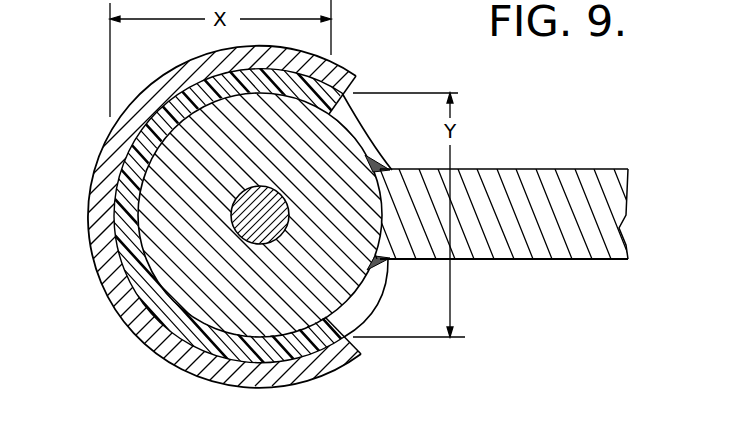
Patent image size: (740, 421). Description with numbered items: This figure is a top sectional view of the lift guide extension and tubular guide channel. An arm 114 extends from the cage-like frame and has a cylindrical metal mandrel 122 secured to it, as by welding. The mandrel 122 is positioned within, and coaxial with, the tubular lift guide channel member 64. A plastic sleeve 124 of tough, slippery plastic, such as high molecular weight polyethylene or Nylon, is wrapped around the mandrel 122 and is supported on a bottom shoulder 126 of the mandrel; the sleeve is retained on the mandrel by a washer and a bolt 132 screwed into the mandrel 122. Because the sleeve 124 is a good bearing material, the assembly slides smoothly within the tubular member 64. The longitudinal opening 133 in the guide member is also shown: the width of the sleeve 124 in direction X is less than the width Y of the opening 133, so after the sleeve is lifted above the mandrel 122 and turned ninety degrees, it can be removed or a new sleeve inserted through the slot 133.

The tubular lift guide channel member 64 is at (98, 204).
The plastic sleeve 124 is at (120, 238).
The cylindrical metal mandrel 122 is at (270, 297).
The bolt 132 is at (253, 187).
The bottom shoulder 126 is at (363, 300).
The longitudinal opening 133 is at (356, 79).
The arm 114 is at (527, 168).